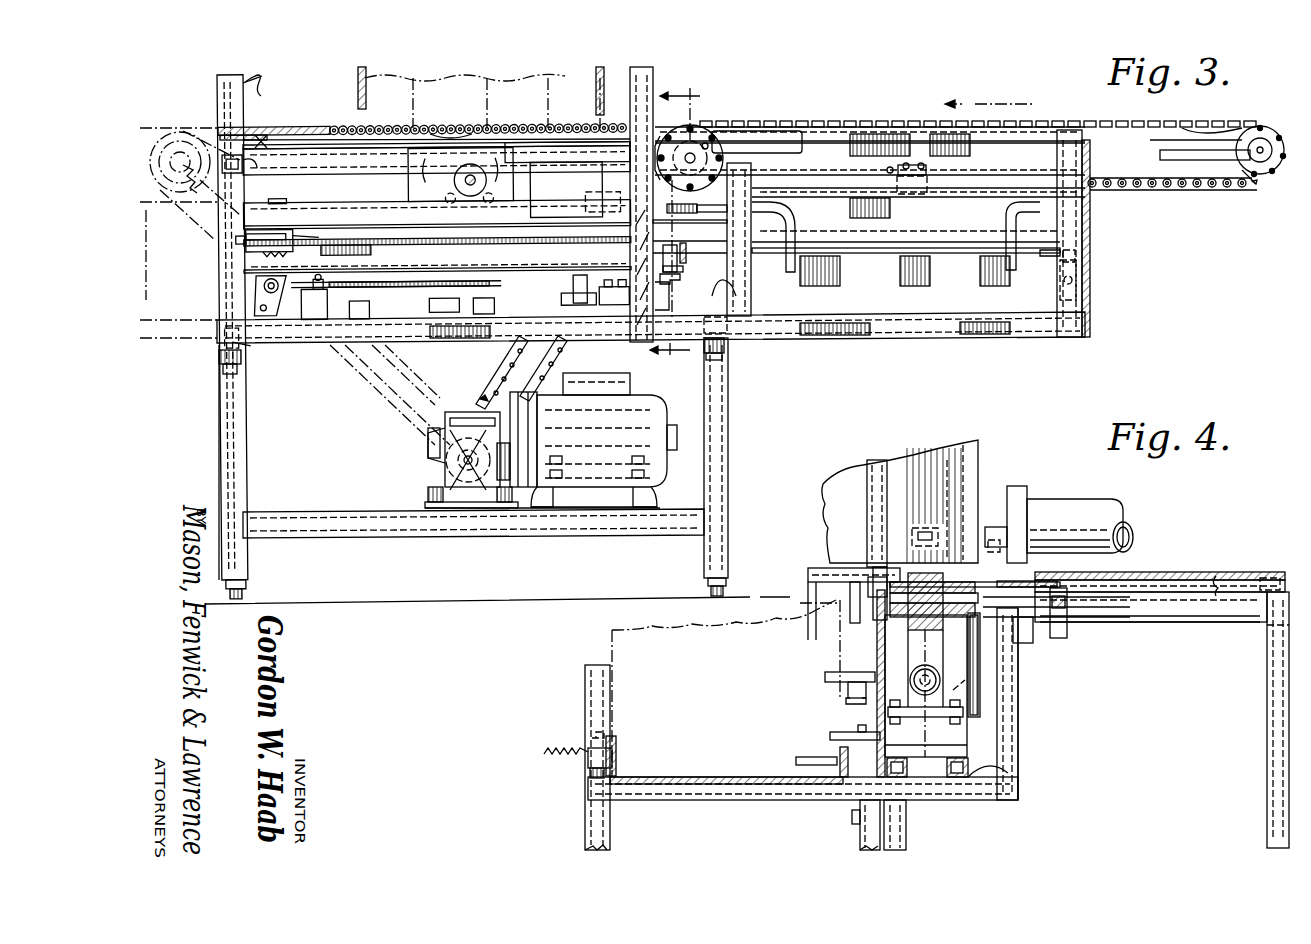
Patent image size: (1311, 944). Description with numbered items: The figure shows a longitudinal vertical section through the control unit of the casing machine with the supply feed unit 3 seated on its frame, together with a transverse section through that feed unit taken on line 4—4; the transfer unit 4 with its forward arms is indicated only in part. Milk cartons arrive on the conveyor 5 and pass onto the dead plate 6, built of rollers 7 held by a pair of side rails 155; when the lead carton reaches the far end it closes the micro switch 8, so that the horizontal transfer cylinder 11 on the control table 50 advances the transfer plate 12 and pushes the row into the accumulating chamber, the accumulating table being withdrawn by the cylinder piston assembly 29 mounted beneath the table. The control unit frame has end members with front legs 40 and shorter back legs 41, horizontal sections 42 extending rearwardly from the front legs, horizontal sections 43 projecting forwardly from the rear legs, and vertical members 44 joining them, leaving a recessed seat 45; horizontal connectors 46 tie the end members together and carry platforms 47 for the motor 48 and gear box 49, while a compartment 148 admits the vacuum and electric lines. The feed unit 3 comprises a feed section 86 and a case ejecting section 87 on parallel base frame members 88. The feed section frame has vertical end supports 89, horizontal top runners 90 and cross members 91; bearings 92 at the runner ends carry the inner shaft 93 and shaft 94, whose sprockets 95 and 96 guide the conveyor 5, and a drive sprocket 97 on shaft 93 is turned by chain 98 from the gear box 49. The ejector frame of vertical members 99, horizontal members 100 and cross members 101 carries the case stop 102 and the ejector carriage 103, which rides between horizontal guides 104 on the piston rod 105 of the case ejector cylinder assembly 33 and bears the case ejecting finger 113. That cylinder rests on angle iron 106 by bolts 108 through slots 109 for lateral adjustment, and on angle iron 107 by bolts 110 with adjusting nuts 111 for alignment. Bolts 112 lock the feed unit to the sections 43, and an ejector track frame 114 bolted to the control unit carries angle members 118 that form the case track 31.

In FIG. 3, the supply feed unit 3 is at (1090, 192).
In FIG. 4, the supply feed unit 3 is at (864, 637).
In FIG. 3, the transfer unit 4 is at (675, 226).
In FIG. 3, the conveyor 5 is at (832, 122).
In FIG. 4, the conveyor 5 is at (916, 631).
In FIG. 3, the dead plate 6 is at (330, 126).
In FIG. 3, the rollers 7 is at (284, 128).
In FIG. 4, the micro switch 8 is at (924, 532).
In FIG. 4, the horizontal transfer cylinder 11 is at (1084, 500).
In FIG. 4, the transfer plate 12 is at (981, 484).
In FIG. 3, the cylinder piston assembly 29 is at (460, 176).
In FIG. 4, the cylinder piston assembly 29 is at (1182, 624).
In FIG. 4, the case track 31 is at (823, 766).
In FIG. 3, the case ejector cylinder assembly 33 is at (915, 247).
In FIG. 4, the case ejector cylinder assembly 33 is at (926, 686).
In FIG. 4, the front legs 40 is at (1270, 826).
In FIG. 3, the back legs 41 is at (728, 482).
In FIG. 4, the back legs 41 is at (900, 824).
In FIG. 4, the horizontal sections 42 is at (1196, 584).
In FIG. 4, the horizontal sections 43 is at (975, 802).
In FIG. 4, the vertical members 44 is at (1012, 740).
In FIG. 4, the recessed seat 45 is at (999, 772).
In FIG. 3, the horizontal connectors 46 is at (580, 538).
In FIG. 3, the platforms 47 is at (474, 510).
In FIG. 3, the motor 48 is at (608, 438).
In FIG. 3, the gear box 49 is at (462, 425).
In FIG. 4, the control table 50 is at (1152, 576).
In FIG. 3, the feed section 86 is at (907, 126).
In FIG. 3, the case ejecting section 87 is at (439, 303).
In FIG. 3, the base frame members 88 is at (873, 340).
In FIG. 4, the base frame members 88 is at (884, 755).
In FIG. 3, the vertical end supports 89 is at (1078, 176).
In FIG. 3, the horizontal top runners 90 is at (872, 132).
In FIG. 3, the cross members 91 is at (932, 190).
In FIG. 3, the bearings 92 is at (762, 155).
In FIG. 3, the inner shaft 93 is at (695, 138).
In FIG. 4, the inner shaft 93 is at (878, 580).
In FIG. 3, the shaft 94 is at (1250, 180).
In FIG. 3, the sprocket 95 is at (718, 140).
In FIG. 4, the sprocket 95 is at (933, 626).
In FIG. 3, the sprocket 96 is at (1235, 176).
In FIG. 4, the drive sprocket 97 is at (996, 618).
In FIG. 3, the chain 98 is at (514, 366).
In FIG. 4, the chain 98 is at (999, 671).
In FIG. 3, the vertical members 99 is at (233, 282).
In FIG. 3, the horizontal members 100 is at (355, 172).
In FIG. 3, the cross members 101 is at (250, 350).
In FIG. 3, the case stop 102 is at (570, 284).
In FIG. 4, the case stop 102 is at (855, 732).
In FIG. 3, the ejector carriage 103 is at (264, 232).
In FIG. 3, the horizontal guides 104 is at (437, 236).
In FIG. 3, the piston rod 105 is at (551, 232).
In FIG. 3, the angle iron 106 is at (672, 300).
In FIG. 4, the angle iron 106 is at (951, 734).
In FIG. 3, the angle iron 107 is at (1070, 290).
In FIG. 3, the bolts 108 is at (678, 283).
In FIG. 3, the slots 109 is at (687, 260).
In FIG. 4, the slots 109 is at (948, 702).
In FIG. 3, the bolts 110 is at (1080, 274).
In FIG. 3, the adjusting nuts 111 is at (1082, 255).
In FIG. 3, the bolts 112 is at (742, 340).
In FIG. 3, the case ejecting finger 113 is at (306, 256).
In FIG. 4, the case ejecting finger 113 is at (826, 678).
In FIG. 4, the ejector track frame 114 is at (748, 810).
In FIG. 4, the angle members 118 is at (616, 772).
In FIG. 3, the compartment 148 is at (244, 83).
In FIG. 3, the side rails 155 is at (447, 133).